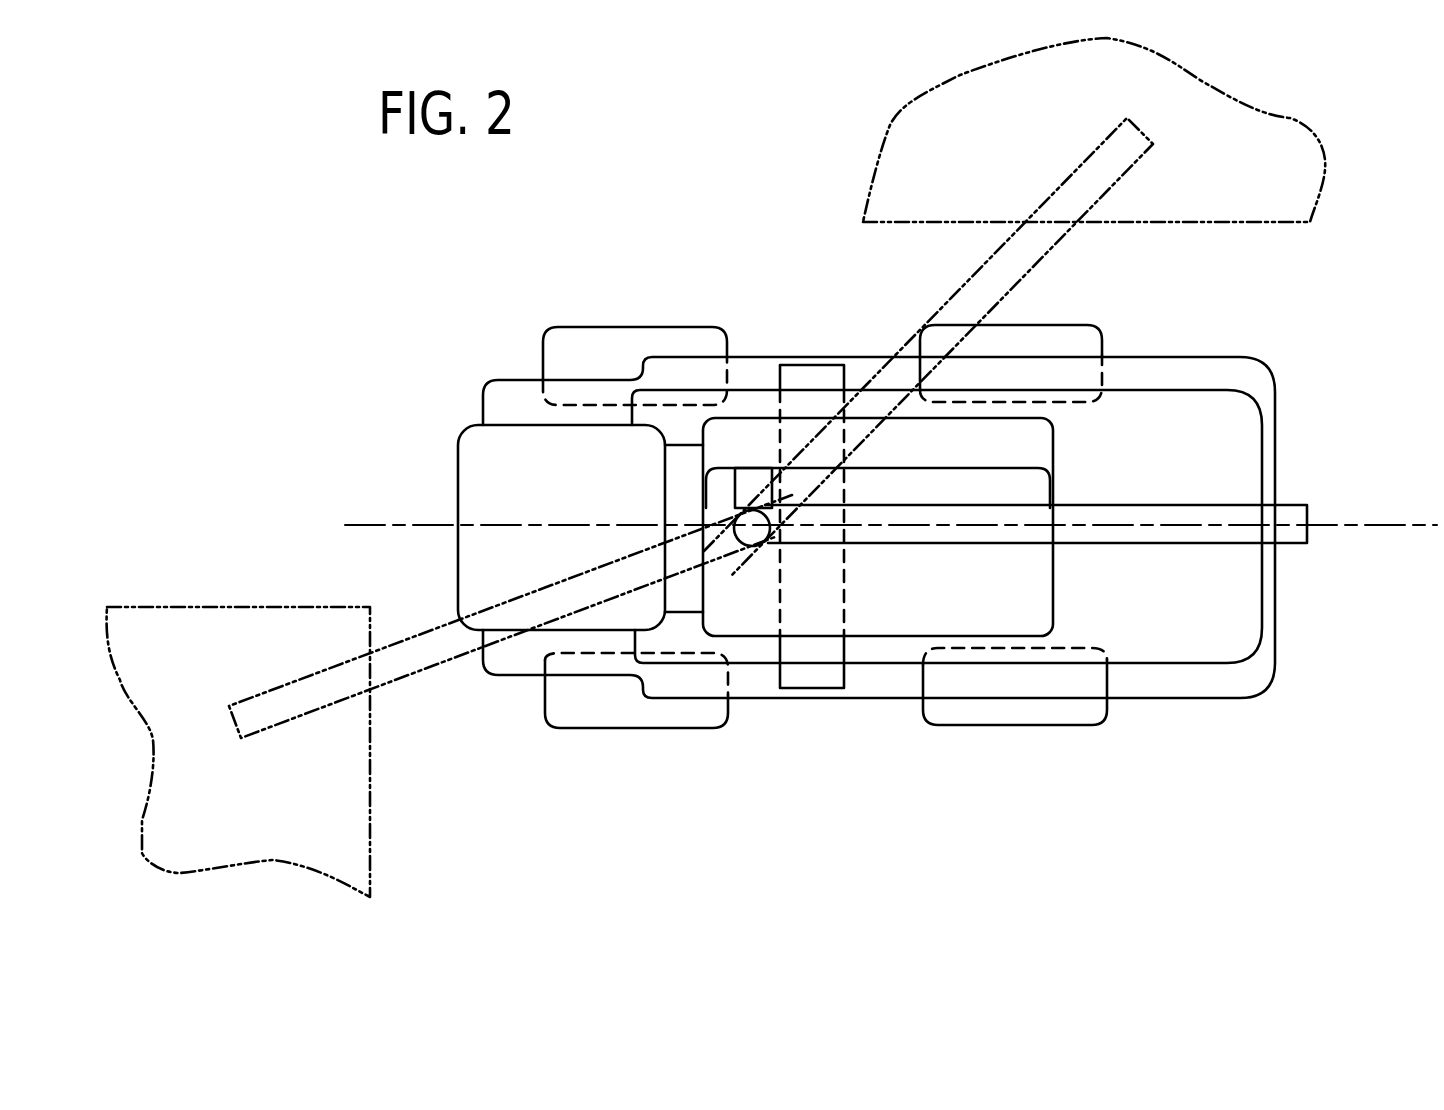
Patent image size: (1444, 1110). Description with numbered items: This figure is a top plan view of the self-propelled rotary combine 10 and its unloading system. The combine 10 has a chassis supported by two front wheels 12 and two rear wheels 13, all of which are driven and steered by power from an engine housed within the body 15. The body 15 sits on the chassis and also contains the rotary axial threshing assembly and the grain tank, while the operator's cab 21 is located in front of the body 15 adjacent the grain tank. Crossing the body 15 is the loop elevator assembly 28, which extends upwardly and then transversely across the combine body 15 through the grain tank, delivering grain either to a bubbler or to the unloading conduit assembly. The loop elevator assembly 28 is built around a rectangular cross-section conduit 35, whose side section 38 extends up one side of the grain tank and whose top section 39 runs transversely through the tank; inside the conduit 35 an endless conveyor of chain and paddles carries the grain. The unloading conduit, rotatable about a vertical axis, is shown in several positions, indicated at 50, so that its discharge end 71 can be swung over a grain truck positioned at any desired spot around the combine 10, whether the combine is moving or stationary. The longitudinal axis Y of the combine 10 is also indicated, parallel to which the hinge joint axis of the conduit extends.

The combine 10 is at (372, 358).
The front wheels 12 is at (583, 335).
The rear wheels 13 is at (1070, 325).
The body 15 is at (485, 388).
The operator's cab 21 is at (580, 503).
The loop elevator assembly 28 is at (808, 362).
The conduit 35 is at (832, 600).
The side section 38 is at (813, 680).
The top section 39 is at (835, 490).
The arm 50 is at (1228, 508).
The discharge end 71 is at (1312, 510).